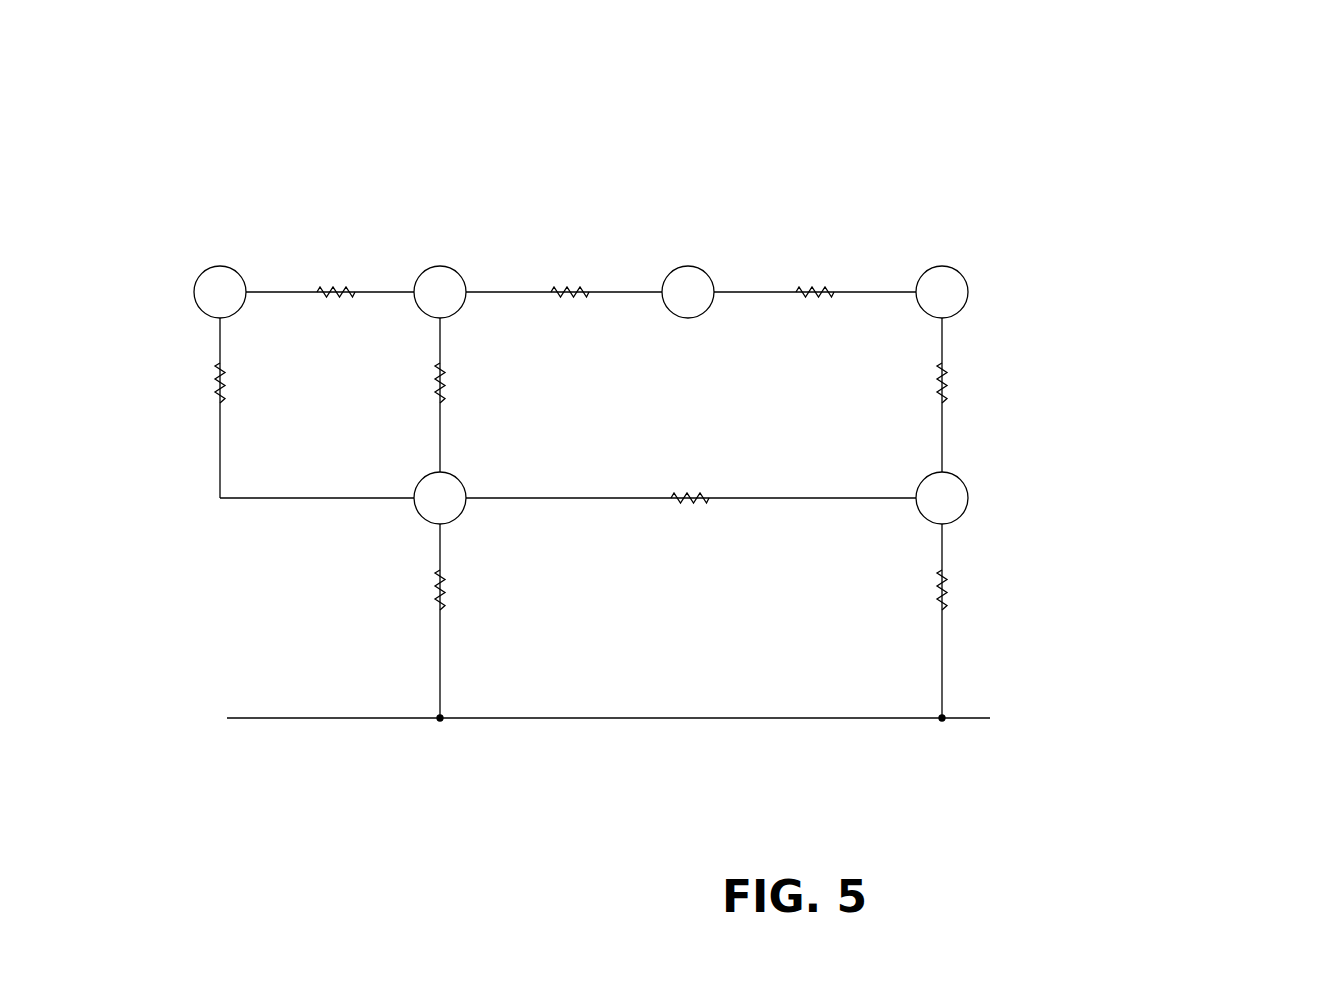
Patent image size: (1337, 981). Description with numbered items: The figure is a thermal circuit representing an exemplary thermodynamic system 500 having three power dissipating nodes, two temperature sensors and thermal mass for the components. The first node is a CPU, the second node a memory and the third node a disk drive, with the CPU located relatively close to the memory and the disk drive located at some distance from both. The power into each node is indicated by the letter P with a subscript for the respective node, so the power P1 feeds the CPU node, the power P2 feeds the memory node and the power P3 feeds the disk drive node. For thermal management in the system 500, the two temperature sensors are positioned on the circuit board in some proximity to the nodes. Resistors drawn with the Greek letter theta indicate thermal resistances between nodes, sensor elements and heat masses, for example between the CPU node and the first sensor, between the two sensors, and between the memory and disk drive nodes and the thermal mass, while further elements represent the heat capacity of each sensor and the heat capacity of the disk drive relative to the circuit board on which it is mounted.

The thermodynamic system 500 is at (1325, 60).
The power into node N1 P1 is at (251, 266).
The power into node N2 P2 is at (474, 262).
The power into node N3 P3 is at (979, 266).